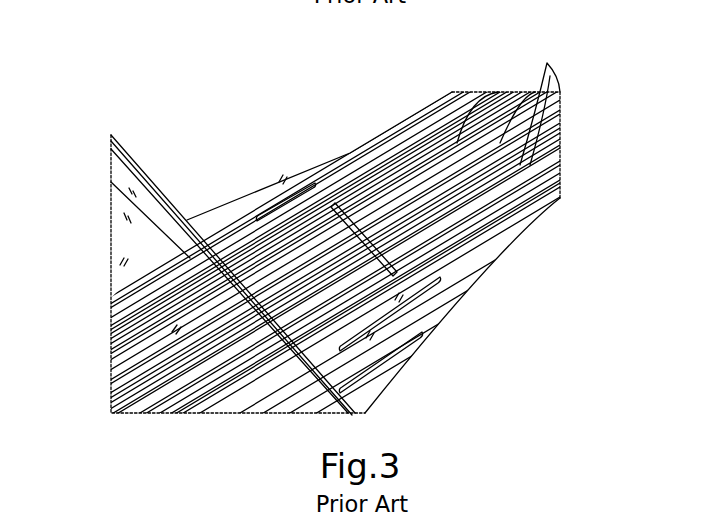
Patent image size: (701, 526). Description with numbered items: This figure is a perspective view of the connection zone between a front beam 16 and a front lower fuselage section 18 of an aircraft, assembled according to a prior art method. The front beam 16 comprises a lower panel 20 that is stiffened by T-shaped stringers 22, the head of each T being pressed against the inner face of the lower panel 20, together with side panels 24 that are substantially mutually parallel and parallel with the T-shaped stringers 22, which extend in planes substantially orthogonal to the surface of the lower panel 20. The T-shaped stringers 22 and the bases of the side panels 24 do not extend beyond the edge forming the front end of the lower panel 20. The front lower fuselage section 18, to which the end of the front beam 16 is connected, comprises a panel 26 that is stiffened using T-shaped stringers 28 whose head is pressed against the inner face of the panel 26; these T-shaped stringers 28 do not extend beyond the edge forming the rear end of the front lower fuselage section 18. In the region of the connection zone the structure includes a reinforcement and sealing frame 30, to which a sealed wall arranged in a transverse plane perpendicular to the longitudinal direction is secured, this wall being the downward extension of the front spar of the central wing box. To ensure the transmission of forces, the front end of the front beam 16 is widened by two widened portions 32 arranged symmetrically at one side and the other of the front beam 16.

The front beam 16 is at (318, 108).
The front lower fuselage section 18 is at (105, 215).
The lower panel 20 is at (500, 93).
The T-shaped stringers 22 is at (540, 100).
The side panels 24 is at (442, 109).
The panel 26 is at (131, 328).
The T-shaped stringers 28 is at (153, 370).
The reinforcement and sealing frame 30 is at (150, 192).
The widened portions 32 is at (278, 202).